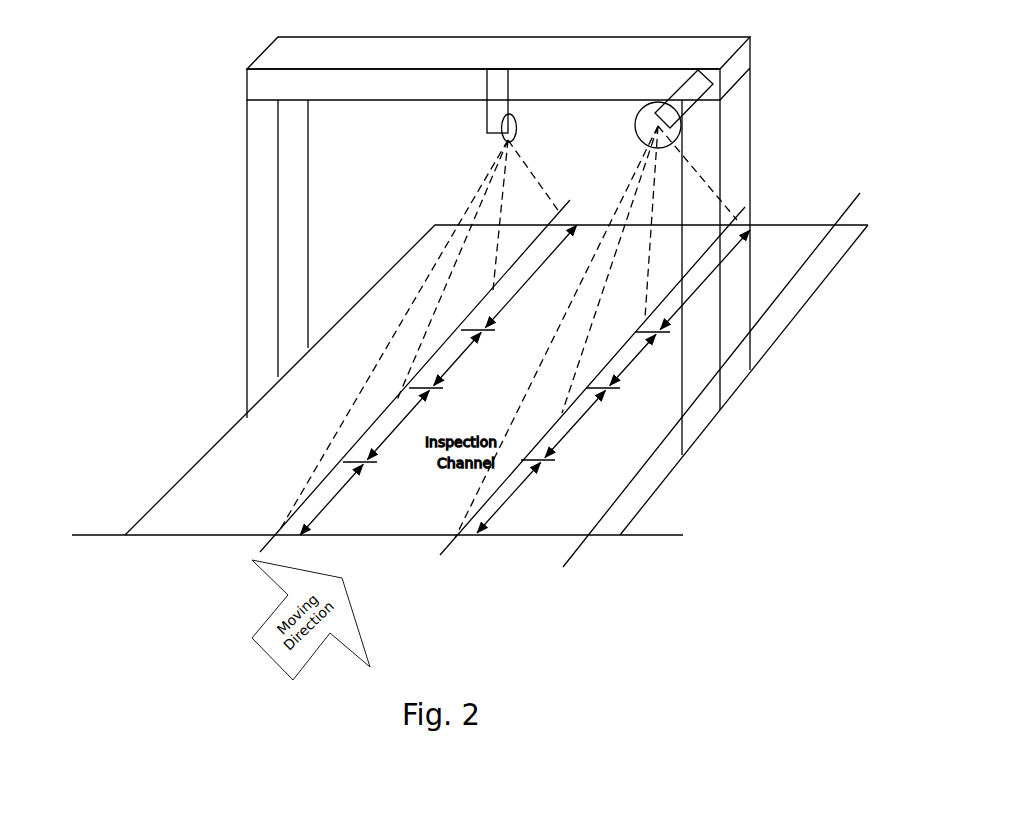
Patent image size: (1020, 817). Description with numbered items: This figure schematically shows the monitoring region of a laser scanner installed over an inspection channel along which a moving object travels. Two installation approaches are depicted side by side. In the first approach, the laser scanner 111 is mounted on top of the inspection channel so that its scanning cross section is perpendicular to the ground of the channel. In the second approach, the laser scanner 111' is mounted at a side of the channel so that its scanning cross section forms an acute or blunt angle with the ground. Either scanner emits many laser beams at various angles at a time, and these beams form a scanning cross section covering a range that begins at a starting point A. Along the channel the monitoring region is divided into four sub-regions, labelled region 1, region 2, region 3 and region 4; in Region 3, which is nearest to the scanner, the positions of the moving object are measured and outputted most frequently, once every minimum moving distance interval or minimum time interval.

The laser scanner 111 is at (422, 268).
The laser scanner 111' is at (642, 298).
The sub-region 1 is at (427, 497).
The sub-region 2 is at (493, 424).
The Region 3 is at (552, 358).
The sub-region 4 is at (617, 277).
The starting point A is at (387, 535).